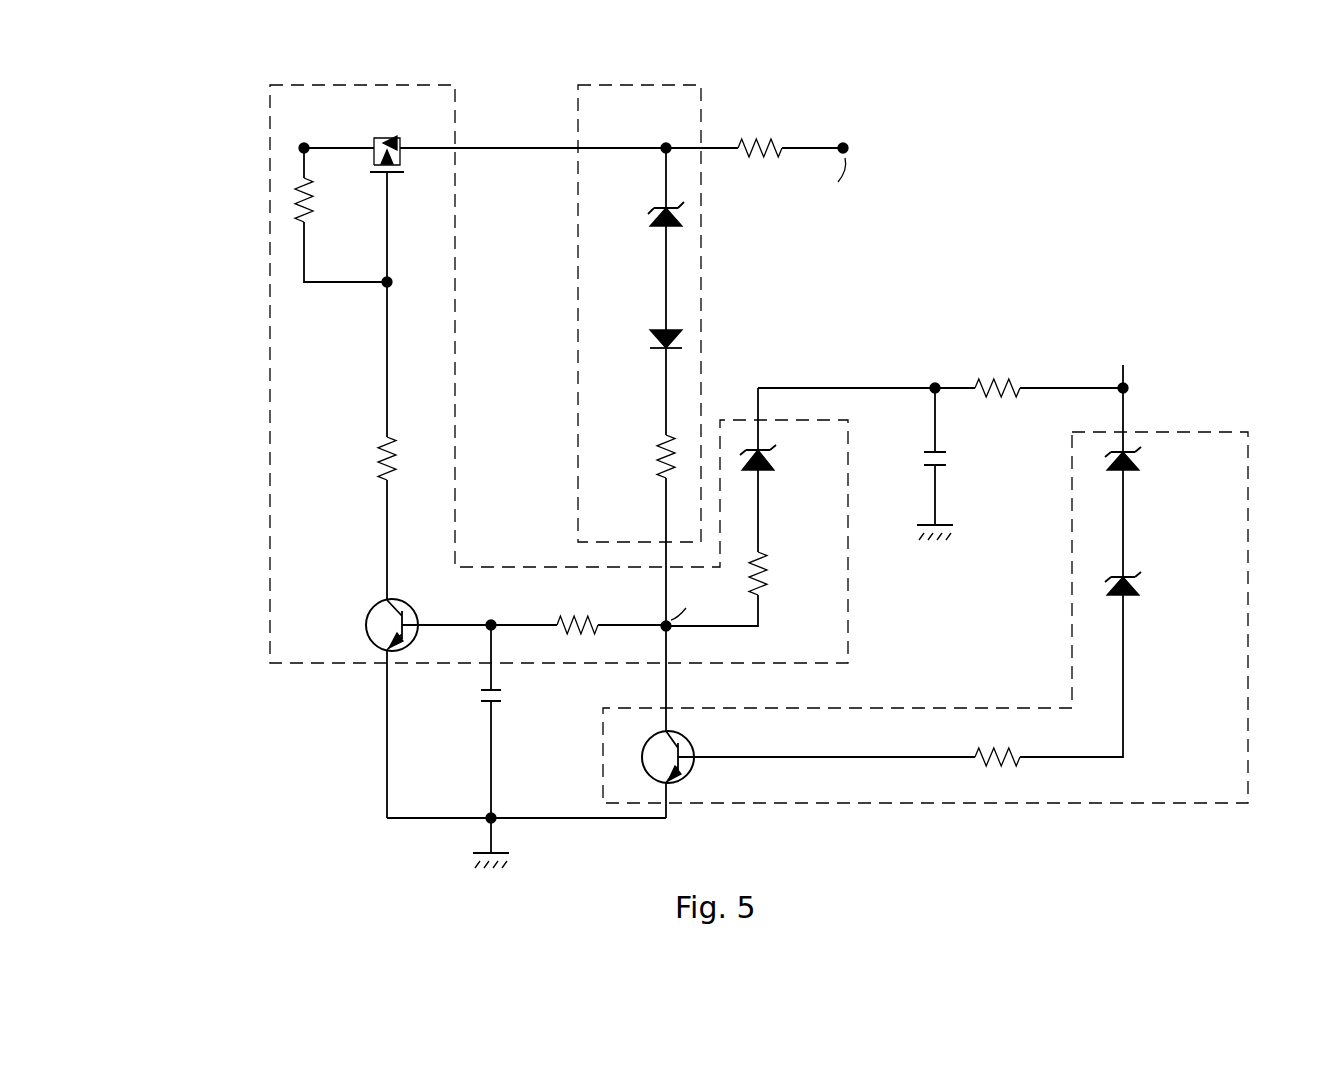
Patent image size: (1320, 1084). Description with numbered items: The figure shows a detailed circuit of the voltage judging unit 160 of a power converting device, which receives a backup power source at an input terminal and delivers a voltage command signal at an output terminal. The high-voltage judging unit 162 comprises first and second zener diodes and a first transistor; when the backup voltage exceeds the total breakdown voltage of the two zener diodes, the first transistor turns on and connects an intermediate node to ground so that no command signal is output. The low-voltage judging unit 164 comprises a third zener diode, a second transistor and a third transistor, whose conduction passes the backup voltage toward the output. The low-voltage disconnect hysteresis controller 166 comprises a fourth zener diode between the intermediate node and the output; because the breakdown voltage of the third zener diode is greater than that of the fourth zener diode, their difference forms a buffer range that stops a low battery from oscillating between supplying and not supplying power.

The voltage judging unit 160 is at (193, 843).
The high-voltage judging unit 162 is at (1172, 431).
The low-voltage judging unit 164 is at (268, 390).
The low-voltage disconnect hysteresis controller 166 is at (577, 389).